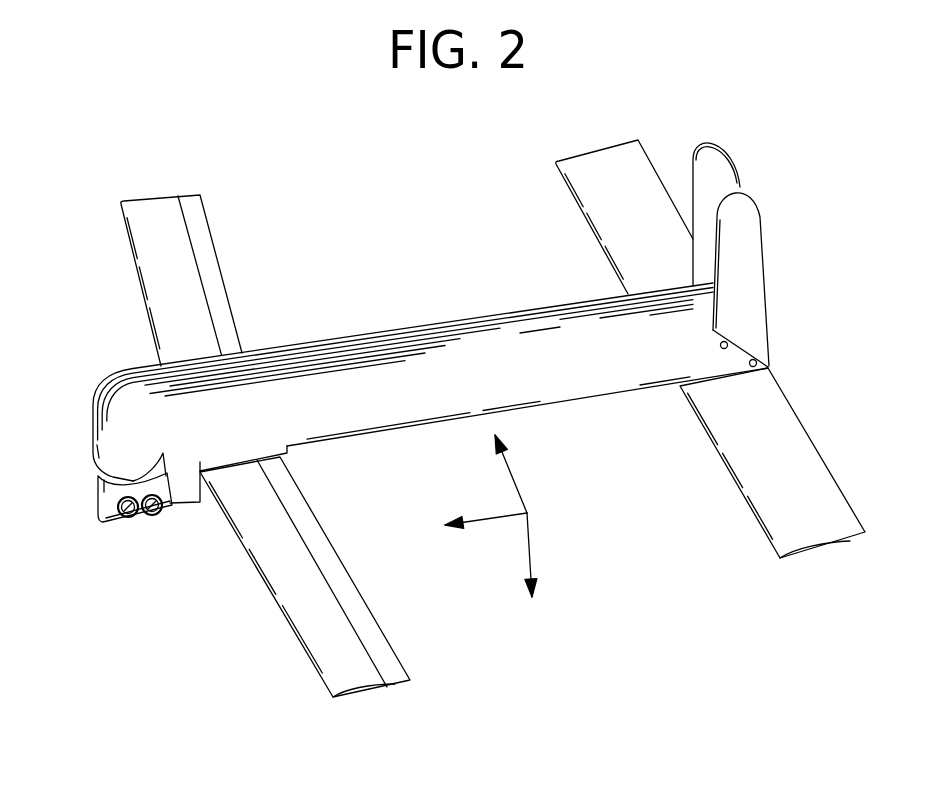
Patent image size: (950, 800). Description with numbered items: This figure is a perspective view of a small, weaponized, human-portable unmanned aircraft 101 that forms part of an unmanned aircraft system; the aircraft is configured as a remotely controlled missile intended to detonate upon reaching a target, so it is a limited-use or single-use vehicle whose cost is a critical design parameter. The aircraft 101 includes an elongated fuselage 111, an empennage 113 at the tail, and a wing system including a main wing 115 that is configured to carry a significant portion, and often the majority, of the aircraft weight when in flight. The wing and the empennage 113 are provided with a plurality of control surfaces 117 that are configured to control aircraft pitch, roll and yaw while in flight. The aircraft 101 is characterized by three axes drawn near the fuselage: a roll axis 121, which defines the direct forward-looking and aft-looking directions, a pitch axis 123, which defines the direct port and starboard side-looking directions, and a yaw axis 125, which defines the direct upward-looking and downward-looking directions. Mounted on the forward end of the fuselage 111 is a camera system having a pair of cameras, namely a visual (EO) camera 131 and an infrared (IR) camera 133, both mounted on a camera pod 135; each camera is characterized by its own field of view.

The unmanned aircraft 101 is at (601, 610).
The fuselage 111 is at (333, 360).
The empennage 113 is at (693, 302).
The main wing 115 is at (295, 607).
The control surfaces 117 is at (205, 246).
The roll axis 121 is at (483, 517).
The pitch axis 123 is at (512, 480).
The yaw axis 125 is at (527, 556).
The visual (EO) camera 131 is at (153, 515).
The infrared (IR) camera 133 is at (132, 523).
The camera pod 135 is at (103, 493).